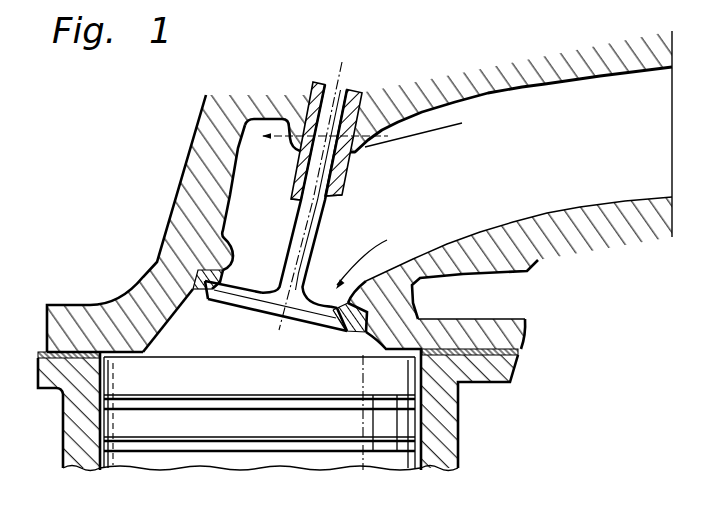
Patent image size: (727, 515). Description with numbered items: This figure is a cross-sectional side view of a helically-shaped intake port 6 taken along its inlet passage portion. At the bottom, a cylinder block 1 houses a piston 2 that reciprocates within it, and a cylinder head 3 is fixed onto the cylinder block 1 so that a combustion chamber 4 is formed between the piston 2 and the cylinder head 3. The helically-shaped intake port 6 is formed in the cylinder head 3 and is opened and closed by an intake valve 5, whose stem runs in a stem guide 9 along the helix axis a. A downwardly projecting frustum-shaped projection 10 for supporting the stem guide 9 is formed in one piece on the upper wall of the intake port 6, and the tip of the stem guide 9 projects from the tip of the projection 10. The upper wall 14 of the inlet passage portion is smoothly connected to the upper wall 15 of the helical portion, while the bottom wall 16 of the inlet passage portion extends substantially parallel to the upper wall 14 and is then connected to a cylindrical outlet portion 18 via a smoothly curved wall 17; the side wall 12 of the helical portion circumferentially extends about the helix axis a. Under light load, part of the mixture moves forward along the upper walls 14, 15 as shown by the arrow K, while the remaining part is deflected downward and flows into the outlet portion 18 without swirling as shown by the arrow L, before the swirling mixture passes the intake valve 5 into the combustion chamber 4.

The cylinder block 1 is at (458, 440).
The piston 2 is at (178, 458).
The cylinder head 3 is at (122, 307).
The combustion chamber 4 is at (204, 338).
The intake valve 5 is at (292, 238).
The helically-shaped intake port 6 is at (519, 161).
The stem guide 9 is at (338, 193).
The frustum-shaped projection 10 is at (349, 150).
The side wall of the helical portion 12 is at (232, 166).
The upper wall of the inlet passage portion 14 is at (505, 96).
The upper wall of the helical portion 15 is at (265, 116).
The bottom wall of the inlet passage portion 16 is at (544, 214).
The smoothly curved wall 17 is at (333, 338).
The cylindrical outlet portion 18 is at (222, 236).
The helix axis a is at (345, 72).
The arrow K is at (440, 129).
The arrow L is at (376, 246).